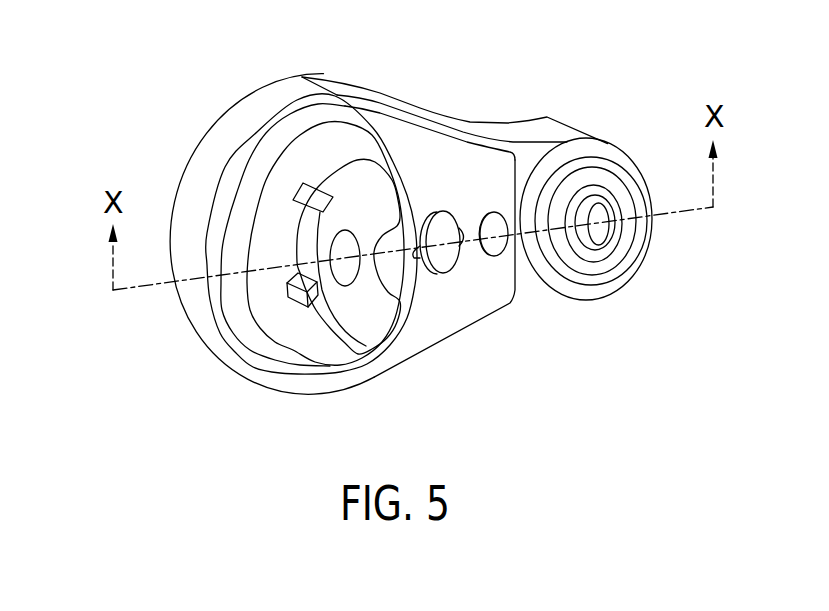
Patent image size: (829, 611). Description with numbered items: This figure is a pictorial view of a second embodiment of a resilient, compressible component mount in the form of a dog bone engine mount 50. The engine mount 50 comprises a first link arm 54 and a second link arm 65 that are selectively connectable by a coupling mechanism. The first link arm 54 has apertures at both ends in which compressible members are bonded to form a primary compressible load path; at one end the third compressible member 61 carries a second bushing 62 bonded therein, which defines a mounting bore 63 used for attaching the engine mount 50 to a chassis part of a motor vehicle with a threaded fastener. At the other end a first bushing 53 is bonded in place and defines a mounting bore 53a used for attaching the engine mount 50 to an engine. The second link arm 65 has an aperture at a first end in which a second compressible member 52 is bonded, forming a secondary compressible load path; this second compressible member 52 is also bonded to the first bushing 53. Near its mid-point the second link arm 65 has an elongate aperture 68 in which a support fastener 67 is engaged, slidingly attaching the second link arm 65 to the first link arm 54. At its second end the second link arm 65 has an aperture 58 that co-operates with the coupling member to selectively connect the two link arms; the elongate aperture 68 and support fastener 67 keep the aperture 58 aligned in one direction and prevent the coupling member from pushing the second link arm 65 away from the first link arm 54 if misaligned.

The dog bone engine mount 50 is at (164, 124).
The second compressible member 52 is at (337, 363).
The first bushing 53 is at (303, 260).
The mounting bore 53a is at (318, 294).
The first link arm 54 is at (474, 115).
The aperture 58 is at (515, 261).
The third compressible member 61 is at (607, 167).
The second bushing 62 is at (611, 221).
The mounting bore 63 is at (619, 240).
The second link arm 65 is at (452, 327).
The support fastener 67 is at (439, 194).
The elongate aperture 68 is at (420, 232).